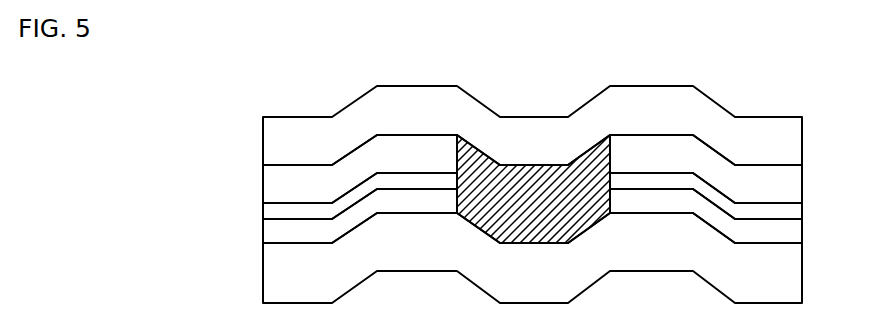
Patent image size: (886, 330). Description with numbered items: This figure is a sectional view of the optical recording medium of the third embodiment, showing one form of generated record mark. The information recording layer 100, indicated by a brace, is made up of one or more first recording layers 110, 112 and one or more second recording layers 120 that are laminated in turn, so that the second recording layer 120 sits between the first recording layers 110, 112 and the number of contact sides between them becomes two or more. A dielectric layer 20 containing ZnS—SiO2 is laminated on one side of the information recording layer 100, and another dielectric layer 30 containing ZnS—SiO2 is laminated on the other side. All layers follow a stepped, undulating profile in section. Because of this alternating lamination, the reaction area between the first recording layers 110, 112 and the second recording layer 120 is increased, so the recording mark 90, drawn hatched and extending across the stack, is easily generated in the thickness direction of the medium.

The dielectric layer 20 is at (793, 138).
The first recording layer 110 is at (793, 182).
The second recording layer 120 is at (793, 208).
The first recording layer 112 is at (793, 228).
The information recording layer 100 is at (529, 189).
The dielectric layer 30 is at (793, 268).
The recording mark 90 is at (536, 173).